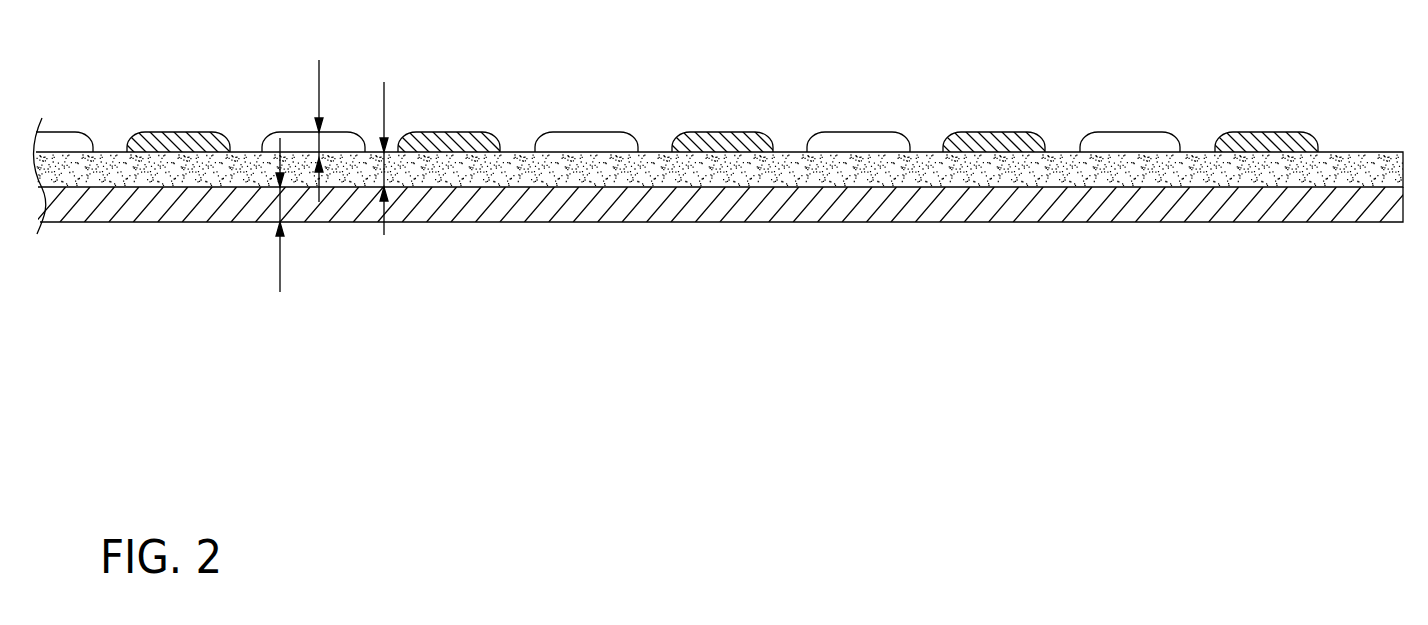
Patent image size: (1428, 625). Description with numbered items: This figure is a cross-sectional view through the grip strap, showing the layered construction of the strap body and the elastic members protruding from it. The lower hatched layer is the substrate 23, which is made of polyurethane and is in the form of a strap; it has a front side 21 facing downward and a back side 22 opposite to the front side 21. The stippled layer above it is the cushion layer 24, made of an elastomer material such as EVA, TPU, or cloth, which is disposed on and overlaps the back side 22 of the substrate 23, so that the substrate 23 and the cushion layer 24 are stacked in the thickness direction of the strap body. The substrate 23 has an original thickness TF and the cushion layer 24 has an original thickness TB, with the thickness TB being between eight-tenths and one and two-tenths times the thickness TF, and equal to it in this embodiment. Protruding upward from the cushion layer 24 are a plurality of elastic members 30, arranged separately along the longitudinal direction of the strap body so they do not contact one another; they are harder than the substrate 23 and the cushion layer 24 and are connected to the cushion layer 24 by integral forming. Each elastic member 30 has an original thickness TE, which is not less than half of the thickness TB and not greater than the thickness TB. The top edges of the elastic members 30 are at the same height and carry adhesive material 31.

The front side 21 is at (731, 200).
The back side 22 is at (1068, 152).
The substrate 23 is at (525, 207).
The cushion layer 24 is at (525, 168).
The elastic members 30 is at (450, 132).
The adhesive material 31 is at (600, 132).
The original thickness of elastic member TE is at (297, 131).
The original thickness of cushion layer TB is at (363, 158).
The original thickness of substrate TF is at (261, 215).